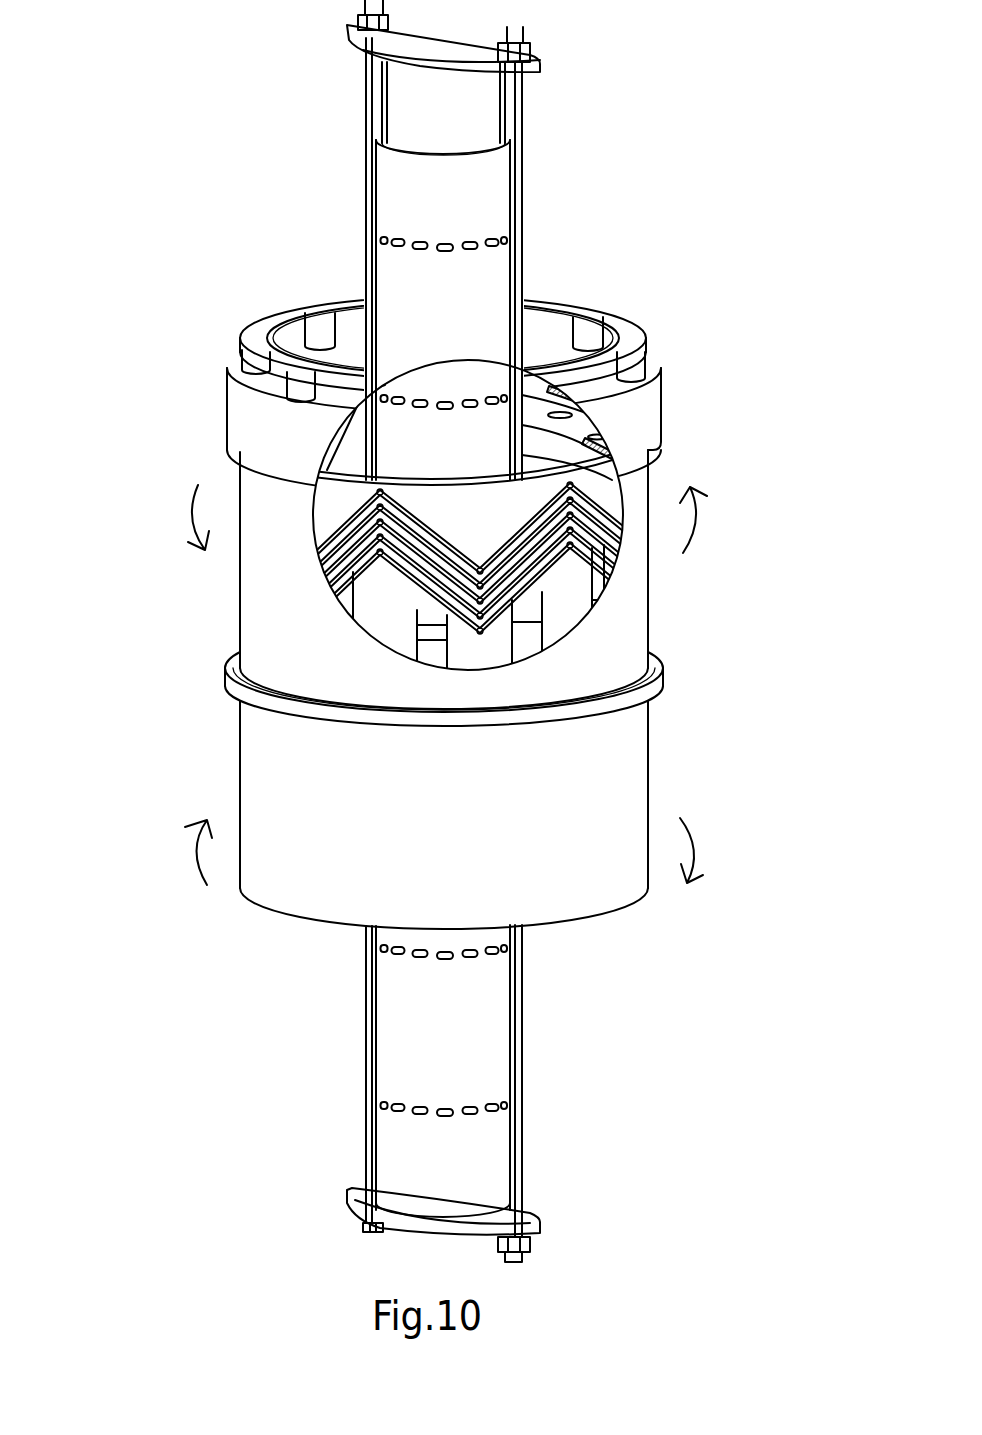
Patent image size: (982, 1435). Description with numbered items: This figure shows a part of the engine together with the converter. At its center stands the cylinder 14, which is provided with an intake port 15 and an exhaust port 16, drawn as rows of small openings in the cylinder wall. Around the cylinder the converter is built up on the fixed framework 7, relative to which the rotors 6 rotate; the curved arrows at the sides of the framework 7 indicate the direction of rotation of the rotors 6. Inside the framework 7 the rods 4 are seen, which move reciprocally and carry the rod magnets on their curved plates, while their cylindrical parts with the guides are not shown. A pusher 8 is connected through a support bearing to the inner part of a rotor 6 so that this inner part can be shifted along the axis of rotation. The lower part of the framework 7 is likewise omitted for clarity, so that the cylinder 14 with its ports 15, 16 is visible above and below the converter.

The rod 4 is at (480, 652).
The rotor 6 is at (593, 485).
The framework 7 is at (303, 453).
The pusher 8 is at (243, 343).
The cylinder 14 is at (445, 358).
The intake port 15 is at (478, 398).
The exhaust port 16 is at (400, 242).